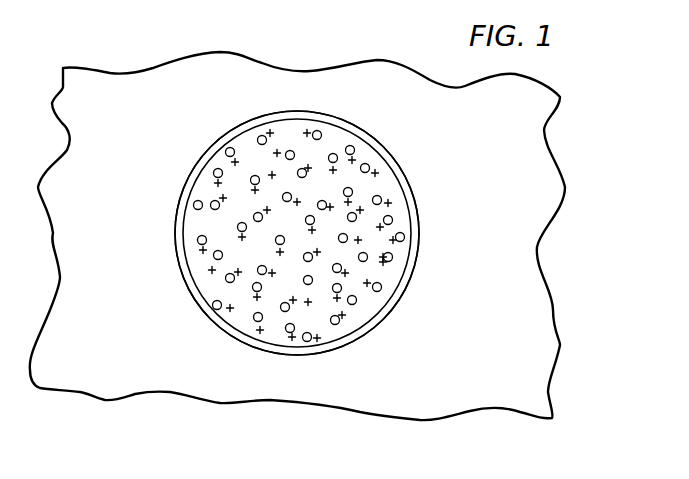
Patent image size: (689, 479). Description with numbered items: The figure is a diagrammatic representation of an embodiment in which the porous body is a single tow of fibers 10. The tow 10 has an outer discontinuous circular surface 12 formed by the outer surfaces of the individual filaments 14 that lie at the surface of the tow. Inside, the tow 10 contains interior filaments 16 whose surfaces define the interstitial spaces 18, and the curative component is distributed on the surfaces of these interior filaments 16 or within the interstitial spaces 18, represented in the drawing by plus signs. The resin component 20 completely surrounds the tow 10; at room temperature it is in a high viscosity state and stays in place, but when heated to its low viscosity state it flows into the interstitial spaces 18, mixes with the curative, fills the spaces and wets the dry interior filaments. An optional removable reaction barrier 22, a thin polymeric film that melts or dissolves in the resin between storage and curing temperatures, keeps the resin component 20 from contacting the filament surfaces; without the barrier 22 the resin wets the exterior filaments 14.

The tow of fibers 10 is at (210, 191).
The outer discontinuous circular surface 12 is at (408, 198).
The individual filaments 14 is at (261, 136).
The interior filaments 16 is at (254, 176).
The interstitial spaces 18 is at (322, 182).
The resin component 20 is at (154, 82).
The removable reaction barrier 22 is at (413, 218).